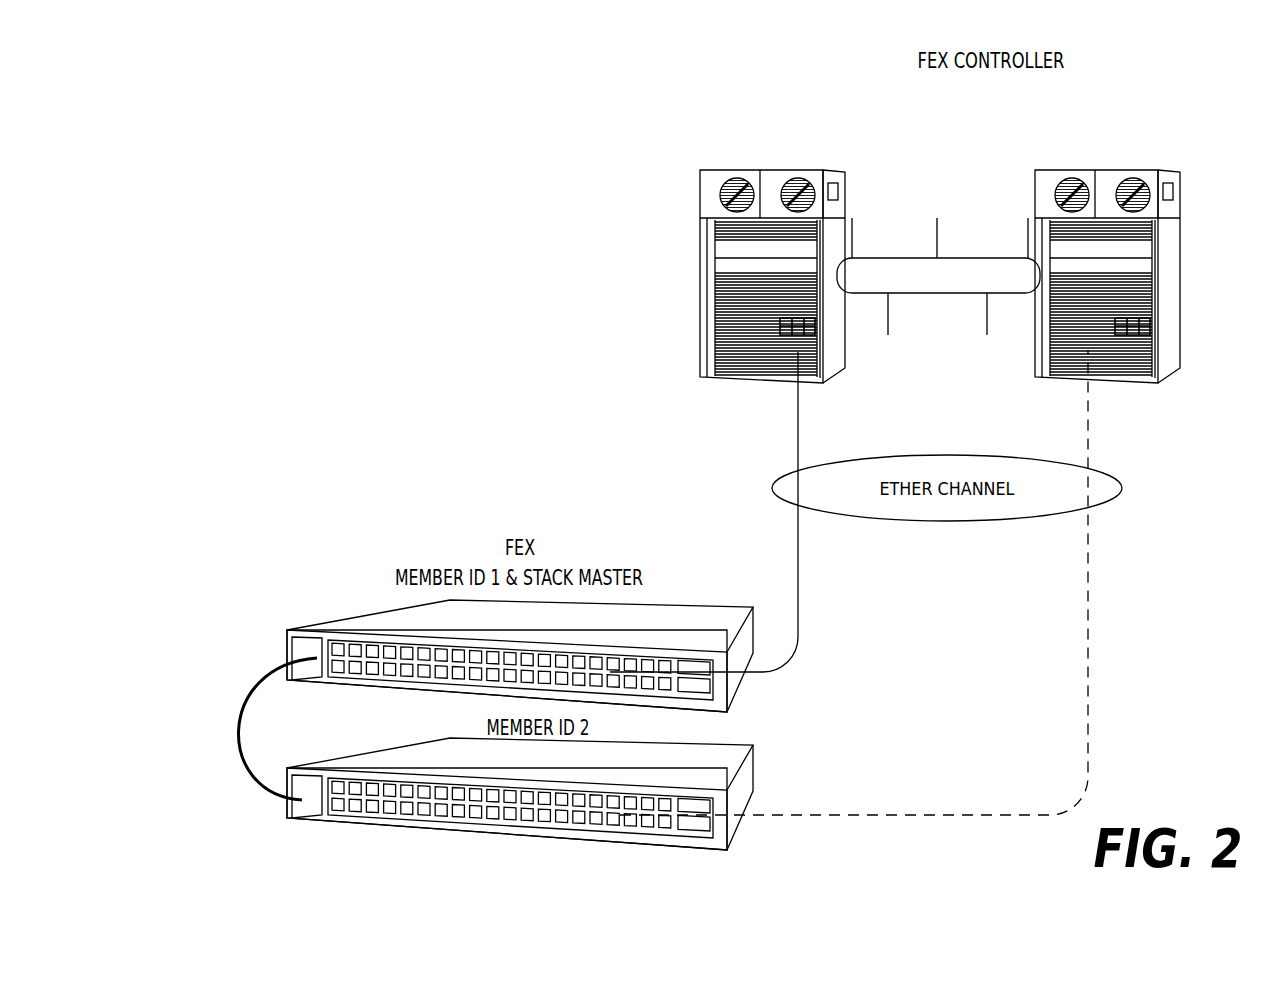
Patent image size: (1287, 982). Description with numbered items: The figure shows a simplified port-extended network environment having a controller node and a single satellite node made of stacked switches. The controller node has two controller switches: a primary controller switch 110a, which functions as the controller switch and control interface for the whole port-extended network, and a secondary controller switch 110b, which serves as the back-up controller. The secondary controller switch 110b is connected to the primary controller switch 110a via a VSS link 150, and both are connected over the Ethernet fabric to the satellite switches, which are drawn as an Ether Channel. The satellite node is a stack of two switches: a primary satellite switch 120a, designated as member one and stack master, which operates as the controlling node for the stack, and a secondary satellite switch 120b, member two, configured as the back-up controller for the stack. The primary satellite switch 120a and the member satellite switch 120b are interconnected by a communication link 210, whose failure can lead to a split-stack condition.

The primary controller switch 110a is at (722, 170).
The secondary controller switch 110b is at (1132, 170).
The VSS link 150 is at (882, 258).
The primary satellite switch 120a is at (287, 642).
The secondary satellite switch 120b is at (268, 813).
The communication link 210 is at (237, 710).